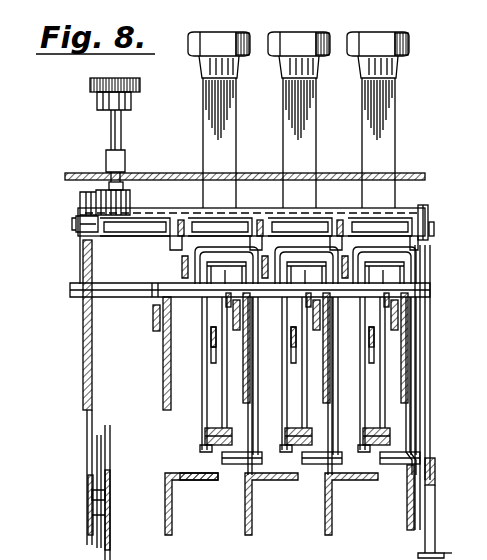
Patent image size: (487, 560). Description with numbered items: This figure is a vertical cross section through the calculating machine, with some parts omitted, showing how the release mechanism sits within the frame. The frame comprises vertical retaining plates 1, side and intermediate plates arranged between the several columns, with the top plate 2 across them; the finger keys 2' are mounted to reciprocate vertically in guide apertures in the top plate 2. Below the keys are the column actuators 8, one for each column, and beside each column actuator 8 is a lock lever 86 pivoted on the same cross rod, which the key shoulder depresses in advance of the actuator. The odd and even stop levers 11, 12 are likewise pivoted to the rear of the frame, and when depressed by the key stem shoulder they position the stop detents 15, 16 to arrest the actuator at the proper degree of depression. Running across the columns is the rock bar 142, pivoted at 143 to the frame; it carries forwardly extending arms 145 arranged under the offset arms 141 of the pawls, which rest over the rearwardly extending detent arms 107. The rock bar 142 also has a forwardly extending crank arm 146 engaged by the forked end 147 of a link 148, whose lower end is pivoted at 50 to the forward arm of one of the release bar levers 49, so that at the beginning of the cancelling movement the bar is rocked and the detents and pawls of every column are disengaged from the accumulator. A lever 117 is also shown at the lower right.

The vertical retaining plate 1 is at (160, 368).
The top plate 2 is at (245, 163).
The finger key 2' is at (300, 35).
The column actuator 8 is at (152, 318).
The odd stop lever 11 is at (211, 356).
The even stop lever 12 is at (268, 400).
The stop detent 15 is at (248, 472).
The stop detent 16 is at (232, 465).
The release bar lever 49 is at (435, 513).
The pivot 50 is at (436, 475).
The lock lever 86 is at (226, 298).
The rearwardly extending arm of detent 107 is at (170, 266).
The lever 117 is at (465, 552).
The offset arm of pawl 141 is at (181, 222).
The rock bar 142 is at (233, 226).
The pivot of rock bar 143 is at (74, 224).
The forwardly extending arm 145 is at (175, 245).
The crank arm 146 is at (434, 228).
The forked end of link 147 is at (428, 212).
The link 148 is at (431, 352).